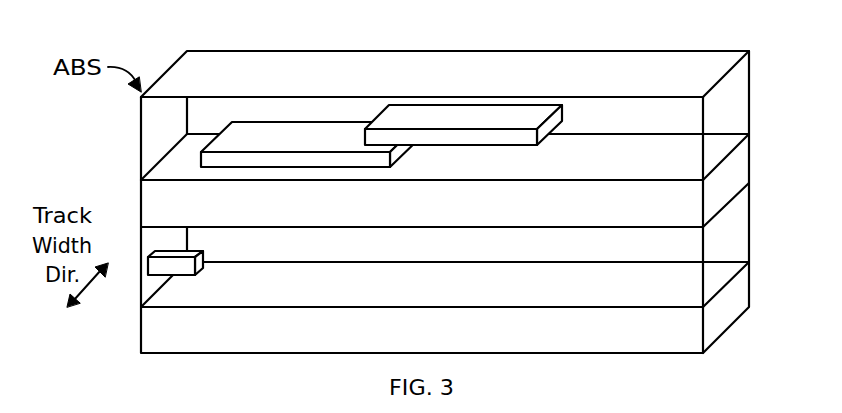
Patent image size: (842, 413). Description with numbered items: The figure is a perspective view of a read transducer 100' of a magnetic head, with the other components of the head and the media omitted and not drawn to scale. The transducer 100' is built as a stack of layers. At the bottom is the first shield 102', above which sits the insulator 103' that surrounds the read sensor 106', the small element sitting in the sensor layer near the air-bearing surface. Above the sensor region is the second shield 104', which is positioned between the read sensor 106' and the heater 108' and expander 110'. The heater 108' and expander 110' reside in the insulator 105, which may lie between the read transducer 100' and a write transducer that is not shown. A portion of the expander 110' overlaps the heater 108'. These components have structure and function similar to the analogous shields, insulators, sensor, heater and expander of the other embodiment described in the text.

The read transducer 100' is at (387, 183).
The first shield 102' is at (471, 298).
The insulator 103' is at (471, 199).
The second shield 104' is at (403, 237).
The insulator 105 is at (750, 105).
The read sensor 106' is at (146, 286).
The heater 108' is at (496, 84).
The expander 110' is at (311, 94).